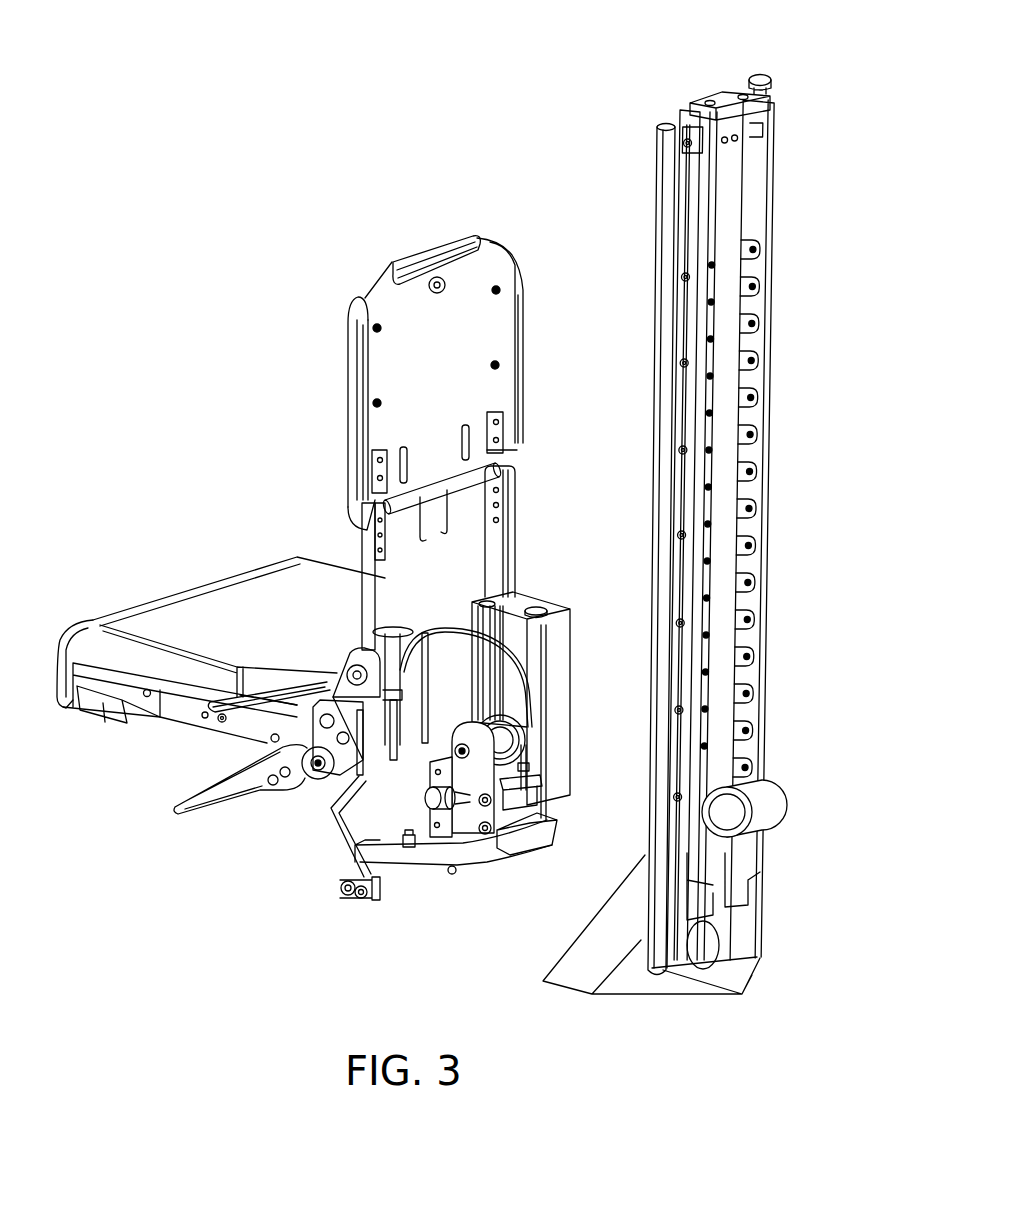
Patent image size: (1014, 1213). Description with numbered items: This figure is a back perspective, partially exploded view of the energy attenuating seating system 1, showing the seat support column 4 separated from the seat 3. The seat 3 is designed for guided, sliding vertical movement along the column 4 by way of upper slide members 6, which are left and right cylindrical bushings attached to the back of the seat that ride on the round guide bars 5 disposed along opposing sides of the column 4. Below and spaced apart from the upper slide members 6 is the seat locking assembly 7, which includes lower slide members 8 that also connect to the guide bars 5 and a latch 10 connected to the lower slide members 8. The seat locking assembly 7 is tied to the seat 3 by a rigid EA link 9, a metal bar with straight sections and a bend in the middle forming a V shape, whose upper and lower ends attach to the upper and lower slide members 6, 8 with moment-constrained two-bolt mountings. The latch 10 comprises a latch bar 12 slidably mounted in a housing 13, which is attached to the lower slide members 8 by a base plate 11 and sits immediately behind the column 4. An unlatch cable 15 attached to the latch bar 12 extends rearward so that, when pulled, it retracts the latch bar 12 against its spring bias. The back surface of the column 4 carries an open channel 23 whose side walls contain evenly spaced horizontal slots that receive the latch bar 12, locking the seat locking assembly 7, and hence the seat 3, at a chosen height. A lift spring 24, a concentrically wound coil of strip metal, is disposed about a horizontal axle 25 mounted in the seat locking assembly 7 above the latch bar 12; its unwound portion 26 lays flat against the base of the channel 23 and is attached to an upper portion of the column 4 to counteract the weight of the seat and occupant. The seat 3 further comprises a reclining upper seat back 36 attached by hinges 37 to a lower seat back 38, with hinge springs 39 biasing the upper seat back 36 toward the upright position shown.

The energy attenuating seating system 1 is at (100, 138).
The seat 3 is at (172, 463).
The seat support column 4 is at (812, 176).
The guide bars 5 is at (770, 76).
The upper slide members 6 is at (553, 606).
The seat locking assembly 7 is at (322, 893).
The lower slide members 8 is at (415, 883).
The EA link 9 is at (340, 833).
The latch 10 is at (565, 762).
The base plate 11 is at (452, 874).
The latch bar 12 is at (432, 798).
The housing 13 is at (538, 830).
The unlatch cable 15 is at (522, 784).
The open channel 23 is at (765, 655).
The lift spring 24 is at (770, 787).
The horizontal axle 25 is at (527, 718).
The unwound portion 26 is at (737, 417).
The upper seat back 36 is at (487, 313).
The hinges 37 is at (505, 432).
The lower seat back 38 is at (482, 543).
The hinge springs 39 is at (460, 448).